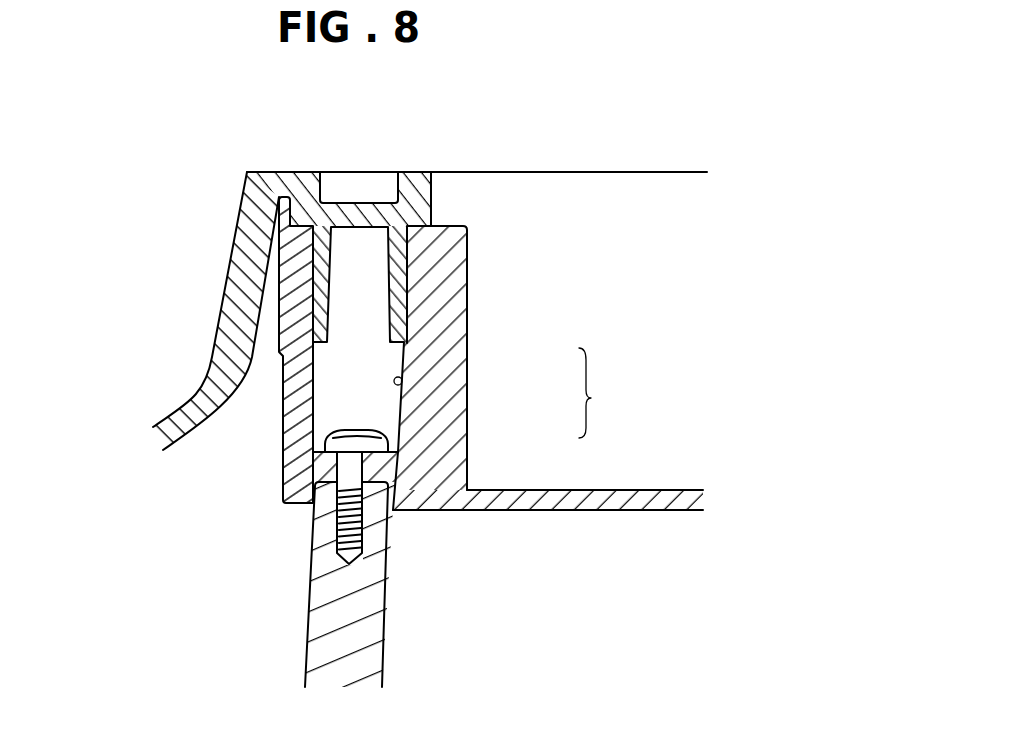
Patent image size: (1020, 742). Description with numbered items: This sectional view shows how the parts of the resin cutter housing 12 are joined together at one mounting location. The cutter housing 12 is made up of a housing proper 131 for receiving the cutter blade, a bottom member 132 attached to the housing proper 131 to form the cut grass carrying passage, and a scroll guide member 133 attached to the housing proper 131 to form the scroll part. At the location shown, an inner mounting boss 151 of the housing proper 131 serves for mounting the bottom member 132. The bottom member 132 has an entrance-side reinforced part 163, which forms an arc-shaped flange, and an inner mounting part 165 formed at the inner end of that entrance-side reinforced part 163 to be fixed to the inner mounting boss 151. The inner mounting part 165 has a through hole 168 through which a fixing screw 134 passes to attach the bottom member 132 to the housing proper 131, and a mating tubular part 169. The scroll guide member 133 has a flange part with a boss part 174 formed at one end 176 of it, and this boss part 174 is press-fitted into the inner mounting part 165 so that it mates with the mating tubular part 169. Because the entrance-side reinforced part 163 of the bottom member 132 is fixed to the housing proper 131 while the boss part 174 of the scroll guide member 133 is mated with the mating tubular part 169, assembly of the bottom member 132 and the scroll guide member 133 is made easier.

The cutter housing 12 is at (240, 118).
The scroll guide member 133 is at (217, 223).
The fixing screw 134 is at (338, 428).
The end 176 is at (420, 172).
The boss part 174 is at (410, 267).
The bottom member 132 is at (630, 313).
The mating tubular part 169 is at (402, 381).
The through hole 168 is at (376, 433).
The inner mounting part 165 is at (608, 393).
The entrance-side reinforced part 163 is at (680, 489).
The inner mounting boss 151 is at (387, 592).
The housing proper 131 is at (262, 645).